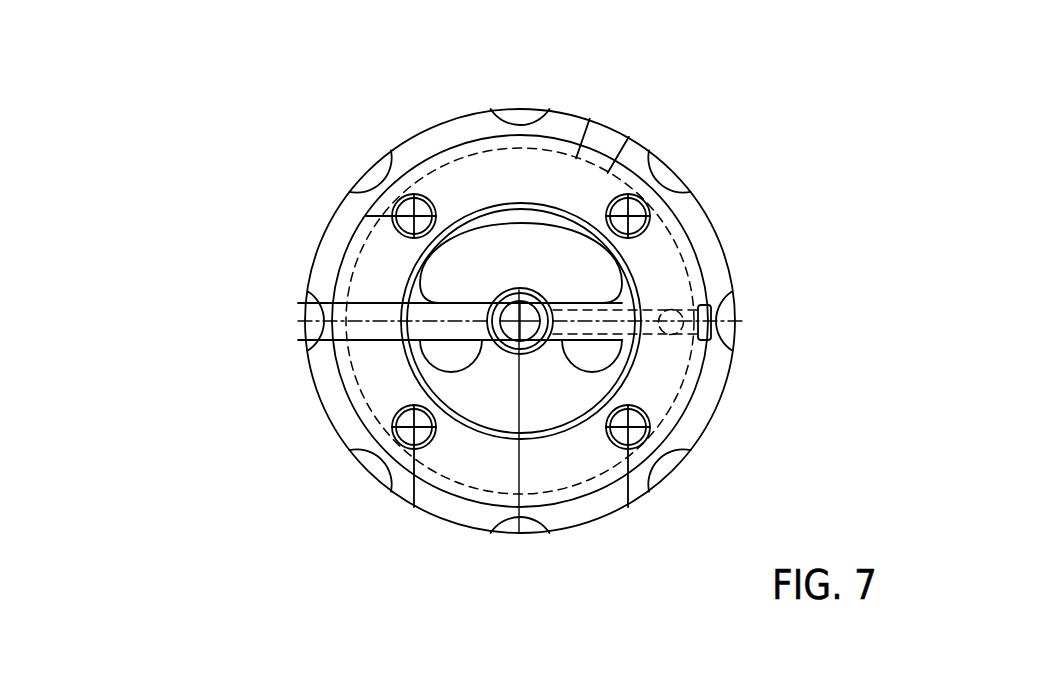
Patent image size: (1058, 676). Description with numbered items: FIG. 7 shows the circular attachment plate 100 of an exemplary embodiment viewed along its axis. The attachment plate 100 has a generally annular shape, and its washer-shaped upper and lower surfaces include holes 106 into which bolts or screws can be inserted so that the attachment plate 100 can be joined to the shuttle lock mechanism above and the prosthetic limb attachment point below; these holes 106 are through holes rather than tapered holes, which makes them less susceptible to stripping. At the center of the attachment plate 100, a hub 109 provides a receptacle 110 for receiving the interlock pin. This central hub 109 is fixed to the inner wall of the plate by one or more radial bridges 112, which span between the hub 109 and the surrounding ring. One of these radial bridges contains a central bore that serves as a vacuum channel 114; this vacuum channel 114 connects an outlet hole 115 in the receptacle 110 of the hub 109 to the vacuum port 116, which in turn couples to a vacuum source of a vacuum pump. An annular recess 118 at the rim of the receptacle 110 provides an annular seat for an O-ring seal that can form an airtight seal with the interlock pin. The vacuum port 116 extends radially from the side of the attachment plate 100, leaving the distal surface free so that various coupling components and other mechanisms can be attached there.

The attachment plate 100 is at (192, 222).
The holes 106 is at (408, 208).
The hub 109 is at (482, 350).
The receptacle 110 is at (507, 308).
The radial bridges 112 is at (583, 303).
The central bore (vacuum channel) 114 is at (590, 328).
The outlet hole 115 is at (540, 307).
The vacuum port 116 is at (740, 320).
The annular recess 118 is at (508, 345).